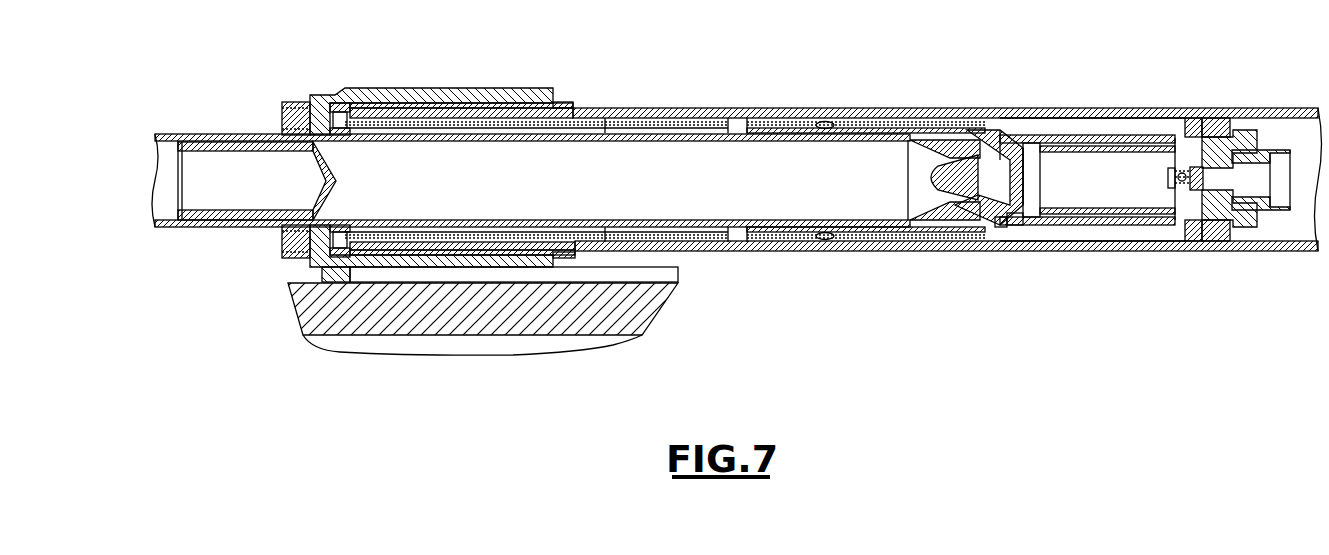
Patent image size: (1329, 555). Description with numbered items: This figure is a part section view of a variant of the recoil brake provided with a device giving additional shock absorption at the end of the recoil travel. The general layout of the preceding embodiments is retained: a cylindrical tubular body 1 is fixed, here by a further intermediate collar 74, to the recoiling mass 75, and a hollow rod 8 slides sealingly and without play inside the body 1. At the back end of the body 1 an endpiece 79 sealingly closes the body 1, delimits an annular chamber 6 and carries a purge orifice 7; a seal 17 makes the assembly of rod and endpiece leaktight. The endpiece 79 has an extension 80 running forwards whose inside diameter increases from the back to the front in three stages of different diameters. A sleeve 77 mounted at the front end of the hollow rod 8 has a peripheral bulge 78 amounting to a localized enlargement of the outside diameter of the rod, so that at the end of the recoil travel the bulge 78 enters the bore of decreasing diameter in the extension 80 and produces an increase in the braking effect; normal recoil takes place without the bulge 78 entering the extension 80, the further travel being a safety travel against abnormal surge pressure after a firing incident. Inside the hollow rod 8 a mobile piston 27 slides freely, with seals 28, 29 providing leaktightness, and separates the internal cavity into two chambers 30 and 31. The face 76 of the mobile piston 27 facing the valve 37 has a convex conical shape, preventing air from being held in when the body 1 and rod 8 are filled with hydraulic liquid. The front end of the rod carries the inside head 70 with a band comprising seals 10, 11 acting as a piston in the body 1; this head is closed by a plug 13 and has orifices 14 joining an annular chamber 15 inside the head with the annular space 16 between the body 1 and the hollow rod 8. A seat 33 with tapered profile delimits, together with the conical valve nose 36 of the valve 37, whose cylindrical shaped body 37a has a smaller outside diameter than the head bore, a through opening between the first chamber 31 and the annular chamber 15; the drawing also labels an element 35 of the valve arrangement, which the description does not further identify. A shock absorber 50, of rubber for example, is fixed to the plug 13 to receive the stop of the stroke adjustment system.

The cylindrical tubular body 1 is at (640, 108).
The first chamber 31 is at (668, 168).
The intermediate collar 74 is at (467, 100).
The annular chamber 6 is at (378, 110).
The seal 17 is at (311, 100).
The endpiece 79 is at (340, 108).
The purge orifice 7 is at (360, 98).
The extension 80 is at (507, 117).
The hollow rod 8 is at (752, 130).
The peripheral bulge 78 is at (827, 122).
The sleeve 77 is at (870, 128).
The mobile piston 27 is at (233, 132).
The second chamber 30 is at (166, 163).
The seal 28 is at (192, 219).
The seal 29 is at (255, 209).
The face of the mobile piston 76 is at (318, 256).
The recoiling mass 75 is at (485, 306).
The seat 33 is at (918, 137).
The valve nose 36 is at (962, 175).
The valve body 35 is at (978, 152).
The annular chamber 15 is at (1000, 228).
The orifices 14 is at (1013, 224).
The inside head 70 is at (1077, 232).
The valve 37 is at (1100, 139).
The cylindrical shaped body 37a is at (1067, 153).
The annular space 16 is at (1130, 233).
The seal 10 is at (1195, 242).
The seal 11 is at (1215, 242).
The plug 13 is at (1237, 138).
The shock absorber 50 is at (1270, 150).